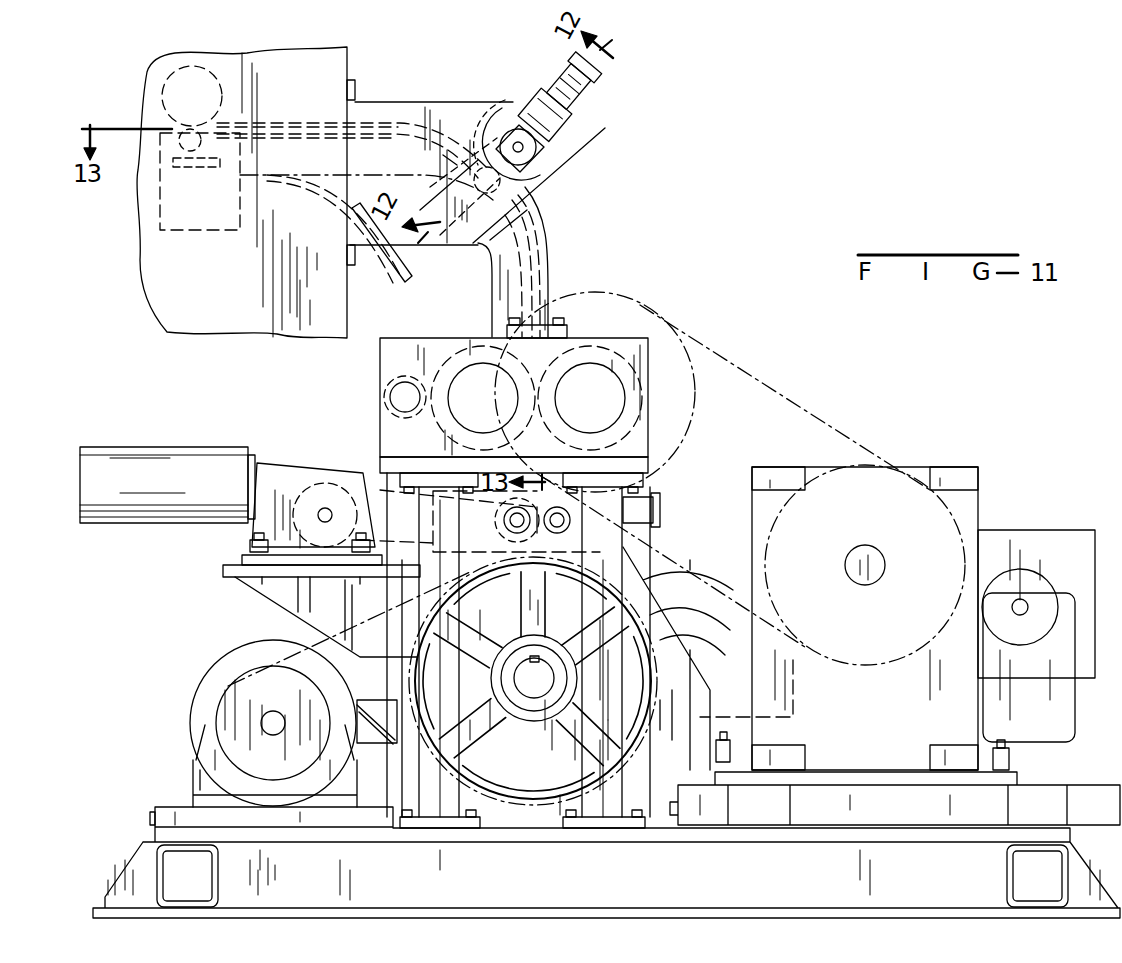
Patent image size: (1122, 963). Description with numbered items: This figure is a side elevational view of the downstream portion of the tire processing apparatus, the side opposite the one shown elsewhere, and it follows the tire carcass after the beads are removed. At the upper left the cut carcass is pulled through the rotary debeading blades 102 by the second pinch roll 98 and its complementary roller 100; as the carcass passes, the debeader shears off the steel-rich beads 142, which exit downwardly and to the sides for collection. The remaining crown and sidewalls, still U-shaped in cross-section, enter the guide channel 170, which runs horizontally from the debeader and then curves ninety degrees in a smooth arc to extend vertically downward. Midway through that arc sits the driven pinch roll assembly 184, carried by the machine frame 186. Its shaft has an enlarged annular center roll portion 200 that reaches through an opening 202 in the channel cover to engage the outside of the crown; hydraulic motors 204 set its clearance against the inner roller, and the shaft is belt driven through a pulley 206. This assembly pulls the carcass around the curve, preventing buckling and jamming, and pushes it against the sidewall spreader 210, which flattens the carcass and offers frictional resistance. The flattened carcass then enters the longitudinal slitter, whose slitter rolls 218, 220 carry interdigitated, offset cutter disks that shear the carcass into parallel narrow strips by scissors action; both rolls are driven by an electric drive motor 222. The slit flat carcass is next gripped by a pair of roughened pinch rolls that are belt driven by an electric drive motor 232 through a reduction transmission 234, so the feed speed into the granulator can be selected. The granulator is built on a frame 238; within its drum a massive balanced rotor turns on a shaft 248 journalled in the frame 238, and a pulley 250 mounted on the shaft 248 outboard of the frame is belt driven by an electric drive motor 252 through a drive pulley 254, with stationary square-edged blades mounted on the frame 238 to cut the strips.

The second pinch roll 98 is at (162, 100).
The complementary roller 100 is at (172, 129).
The rotary debeading blades 102 is at (170, 162).
The beads 142 is at (407, 273).
The guide channel 170 is at (385, 118).
The machine frame 186 is at (448, 103).
The driven pinch roll assembly 184 is at (567, 123).
The center roll portion 200 is at (506, 118).
The opening 202 is at (540, 184).
The hydraulic motors 204 is at (590, 96).
The pulley 206 is at (540, 167).
The sidewall spreader 210 is at (572, 233).
The slitter roll 218 is at (447, 352).
The slitter roll 220 is at (623, 353).
The electric drive motor 222 is at (980, 480).
The electric drive motor 232 is at (132, 448).
The reduction transmission 234 is at (300, 465).
The frame 238 is at (730, 742).
The shaft 248 is at (525, 670).
The pulley 250 is at (636, 740).
The electric drive motor 252 is at (237, 652).
The drive pulley 254 is at (205, 723).